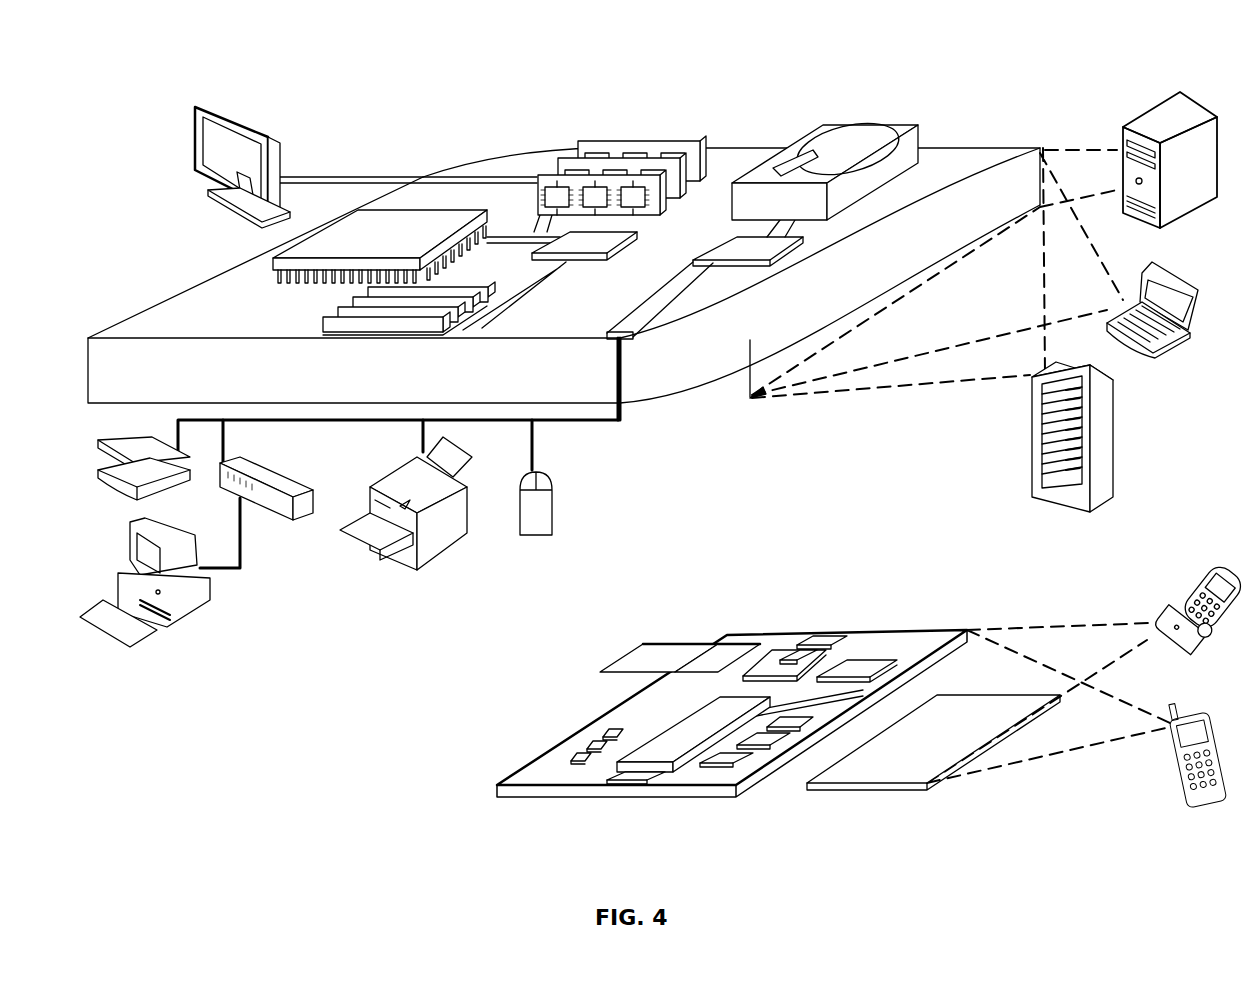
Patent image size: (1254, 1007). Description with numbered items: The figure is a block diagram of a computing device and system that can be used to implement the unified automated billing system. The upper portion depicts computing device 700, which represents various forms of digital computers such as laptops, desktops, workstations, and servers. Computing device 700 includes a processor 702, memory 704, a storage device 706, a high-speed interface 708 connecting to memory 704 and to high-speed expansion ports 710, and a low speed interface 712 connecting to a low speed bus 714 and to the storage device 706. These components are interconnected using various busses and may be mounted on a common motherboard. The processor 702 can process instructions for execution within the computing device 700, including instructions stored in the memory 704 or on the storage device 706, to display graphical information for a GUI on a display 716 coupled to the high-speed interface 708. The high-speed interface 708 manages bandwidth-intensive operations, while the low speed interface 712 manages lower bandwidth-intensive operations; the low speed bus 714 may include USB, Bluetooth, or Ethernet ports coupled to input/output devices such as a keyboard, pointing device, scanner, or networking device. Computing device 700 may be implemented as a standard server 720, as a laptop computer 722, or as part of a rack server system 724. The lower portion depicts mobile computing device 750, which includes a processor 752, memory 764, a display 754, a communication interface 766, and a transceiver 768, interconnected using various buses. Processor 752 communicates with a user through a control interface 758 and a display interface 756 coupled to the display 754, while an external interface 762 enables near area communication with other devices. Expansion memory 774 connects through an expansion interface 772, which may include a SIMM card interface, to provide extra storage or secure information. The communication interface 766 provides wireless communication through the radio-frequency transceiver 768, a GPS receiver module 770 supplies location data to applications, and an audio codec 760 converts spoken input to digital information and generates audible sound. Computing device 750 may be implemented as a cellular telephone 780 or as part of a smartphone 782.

The computing device 700 is at (352, 77).
The processor 702 is at (273, 267).
The memory 704 is at (598, 141).
The storage device 706 is at (824, 132).
The high-speed interface 708 is at (560, 243).
The high-speed expansion ports 710 is at (345, 307).
The low speed interface 712 is at (733, 243).
The low speed bus 714 is at (627, 338).
The display 716 is at (195, 107).
The standard server 720 is at (1123, 128).
The laptop computer 722 is at (1150, 266).
The rack server system 724 is at (1032, 458).
The mobile computing device 750 is at (717, 630).
The processor 752 is at (667, 777).
The display 754 is at (927, 783).
The display interface 756 is at (736, 766).
The control interface 758 is at (773, 745).
The audio codec 760 is at (798, 725).
The external interface 762 is at (633, 780).
The memory 764 is at (590, 747).
The communication interface 766 is at (779, 668).
The transceiver 768 is at (857, 662).
The GPS receiver module 770 is at (815, 640).
The expansion interface 772 is at (713, 644).
The expansion memory 774 is at (645, 644).
The cellular telephone 780 is at (1196, 575).
The smartphone 782 is at (1180, 700).